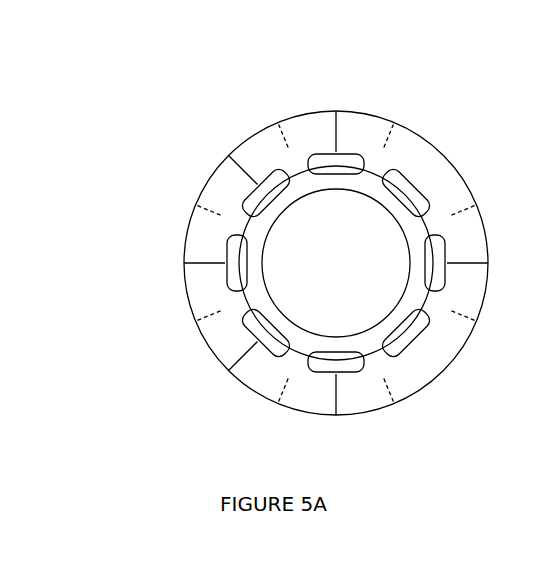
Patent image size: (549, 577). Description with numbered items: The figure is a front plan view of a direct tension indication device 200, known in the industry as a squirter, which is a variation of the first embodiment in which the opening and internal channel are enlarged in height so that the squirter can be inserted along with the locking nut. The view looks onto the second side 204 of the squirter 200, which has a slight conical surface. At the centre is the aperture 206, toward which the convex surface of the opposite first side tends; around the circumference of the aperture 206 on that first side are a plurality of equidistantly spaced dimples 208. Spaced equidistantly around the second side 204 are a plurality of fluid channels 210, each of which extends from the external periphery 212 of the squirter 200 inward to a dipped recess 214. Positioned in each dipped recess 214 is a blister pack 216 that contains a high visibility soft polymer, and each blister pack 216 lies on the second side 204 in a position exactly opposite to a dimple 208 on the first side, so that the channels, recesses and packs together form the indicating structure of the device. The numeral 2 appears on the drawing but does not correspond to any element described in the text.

The direct tension indication device 200 is at (367, 128).
The slot 2 is at (327, 174).
The second side 204 is at (304, 127).
The aperture 206 is at (336, 263).
The dimples 208 is at (548, 84).
The fluid channels 210 is at (413, 183).
The external periphery 212 is at (485, 293).
The dipped recess 214 is at (320, 352).
The blister pack 216 is at (538, 387).